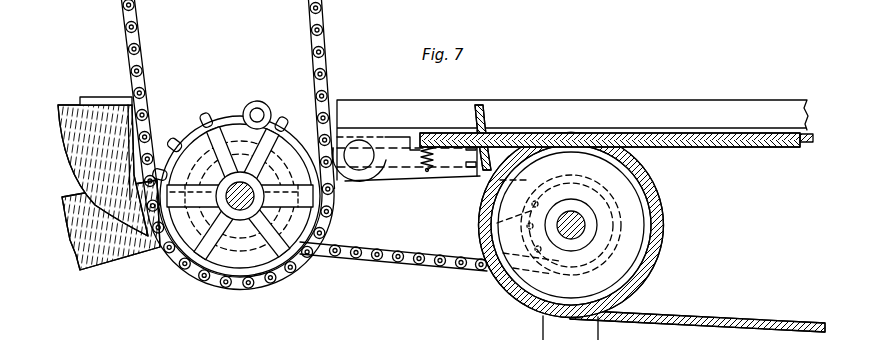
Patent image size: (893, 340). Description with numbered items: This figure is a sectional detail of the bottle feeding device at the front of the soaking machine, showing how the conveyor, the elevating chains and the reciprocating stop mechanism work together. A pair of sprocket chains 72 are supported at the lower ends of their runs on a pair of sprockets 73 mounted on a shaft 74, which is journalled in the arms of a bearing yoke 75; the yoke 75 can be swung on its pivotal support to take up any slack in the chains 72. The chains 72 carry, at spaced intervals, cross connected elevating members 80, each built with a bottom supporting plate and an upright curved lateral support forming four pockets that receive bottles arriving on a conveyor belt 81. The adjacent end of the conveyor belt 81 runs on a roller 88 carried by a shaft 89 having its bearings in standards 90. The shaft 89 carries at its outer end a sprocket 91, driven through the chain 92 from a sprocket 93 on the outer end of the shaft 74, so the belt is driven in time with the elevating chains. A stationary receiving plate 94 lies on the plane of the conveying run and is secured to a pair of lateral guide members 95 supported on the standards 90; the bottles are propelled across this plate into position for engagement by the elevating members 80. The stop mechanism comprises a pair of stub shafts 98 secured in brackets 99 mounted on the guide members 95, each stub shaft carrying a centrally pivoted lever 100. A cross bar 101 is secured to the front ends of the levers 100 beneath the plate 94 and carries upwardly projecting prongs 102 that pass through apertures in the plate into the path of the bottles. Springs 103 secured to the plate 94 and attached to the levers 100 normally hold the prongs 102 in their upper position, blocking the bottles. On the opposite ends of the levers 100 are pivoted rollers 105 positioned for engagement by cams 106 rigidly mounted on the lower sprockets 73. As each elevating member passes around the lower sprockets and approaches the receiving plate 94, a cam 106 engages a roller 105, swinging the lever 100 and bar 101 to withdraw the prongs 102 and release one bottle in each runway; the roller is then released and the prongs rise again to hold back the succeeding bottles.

The sprocket chains 72 is at (136, 22).
The sprockets 73 is at (206, 118).
The shaft 74 is at (230, 220).
The bearing yoke 75 is at (103, 256).
The elevating members 80 is at (70, 105).
The conveyor belt 81 is at (717, 148).
The roller 88 is at (663, 233).
The shaft 89 is at (590, 223).
The standards 90 is at (560, 328).
The sprocket 91 is at (480, 229).
The chain 92 is at (411, 260).
The sprocket 93 is at (302, 277).
The receiving plate 94 is at (512, 133).
The lateral guide members 95 is at (601, 101).
The stub shafts 98 is at (362, 150).
The brackets 99 is at (366, 178).
The lever 100 is at (290, 108).
The cross bar 101 is at (478, 180).
The prongs 102 is at (479, 105).
The springs 103 is at (427, 170).
The rollers 105 is at (254, 100).
The cams 106 is at (326, 232).